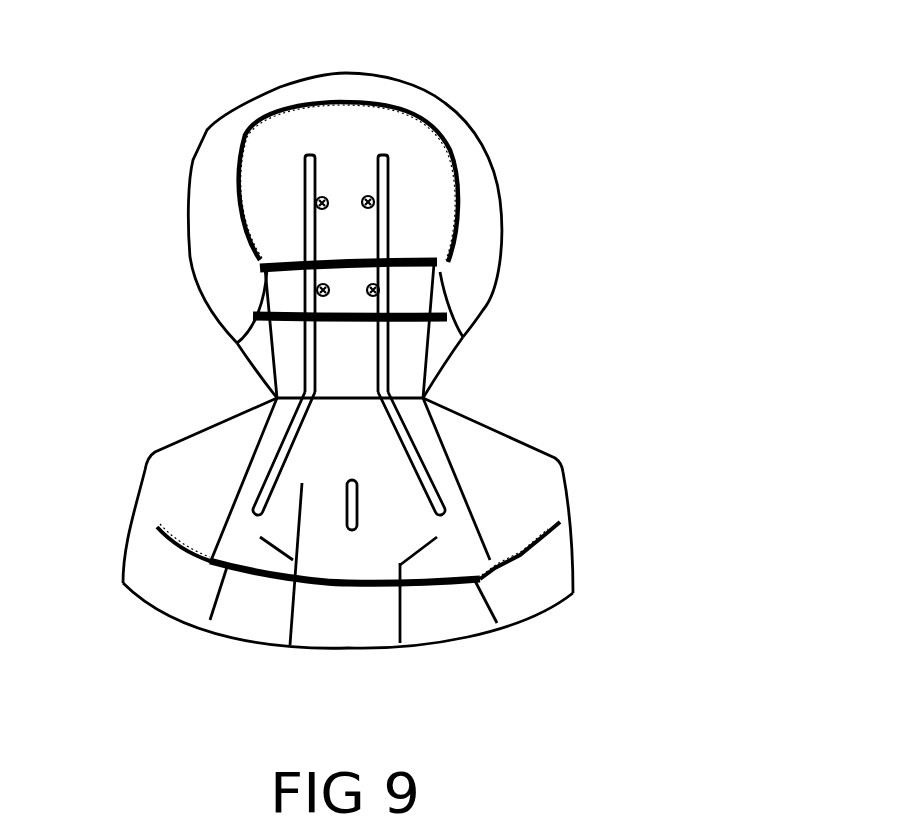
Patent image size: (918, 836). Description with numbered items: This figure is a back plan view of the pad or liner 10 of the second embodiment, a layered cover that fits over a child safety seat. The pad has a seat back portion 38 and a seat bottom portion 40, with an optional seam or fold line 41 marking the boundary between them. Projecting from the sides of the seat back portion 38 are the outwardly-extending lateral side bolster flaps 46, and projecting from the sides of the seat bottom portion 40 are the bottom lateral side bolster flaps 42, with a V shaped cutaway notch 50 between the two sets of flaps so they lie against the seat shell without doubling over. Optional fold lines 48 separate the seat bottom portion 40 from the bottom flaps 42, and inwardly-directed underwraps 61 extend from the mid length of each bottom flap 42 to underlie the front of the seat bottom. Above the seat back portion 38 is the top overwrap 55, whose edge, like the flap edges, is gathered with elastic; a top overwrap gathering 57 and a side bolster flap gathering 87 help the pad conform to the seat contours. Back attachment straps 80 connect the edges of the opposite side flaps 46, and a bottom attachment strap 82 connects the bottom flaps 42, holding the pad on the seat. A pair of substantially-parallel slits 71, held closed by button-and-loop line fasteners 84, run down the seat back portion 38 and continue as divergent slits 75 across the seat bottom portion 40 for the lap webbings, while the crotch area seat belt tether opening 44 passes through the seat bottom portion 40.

The pad or liner 10 is at (113, 143).
The seat back portion 38 is at (327, 140).
The top overwrap 55 is at (343, 98).
The top overwrap gathering 57 is at (377, 103).
The substantially-parallel slits 71 is at (307, 152).
The line fasteners 84 is at (316, 203).
The lateral side bolster flaps 46 is at (473, 227).
The back attachment straps 80 is at (262, 266).
The V shaped cutaway notch 50 is at (234, 384).
The seam or fold line 41 is at (352, 396).
The divergent slits 75 is at (287, 443).
The fold lines 48 is at (243, 487).
The bottom lateral side bolster flaps 42 is at (197, 505).
The side bolster flap gathering 87 is at (180, 550).
The underwraps 61 is at (247, 600).
The seat bottom portion 40 is at (297, 557).
The crotch area seat belt tether opening 44 is at (350, 530).
The bottom attachment strap 82 is at (363, 587).